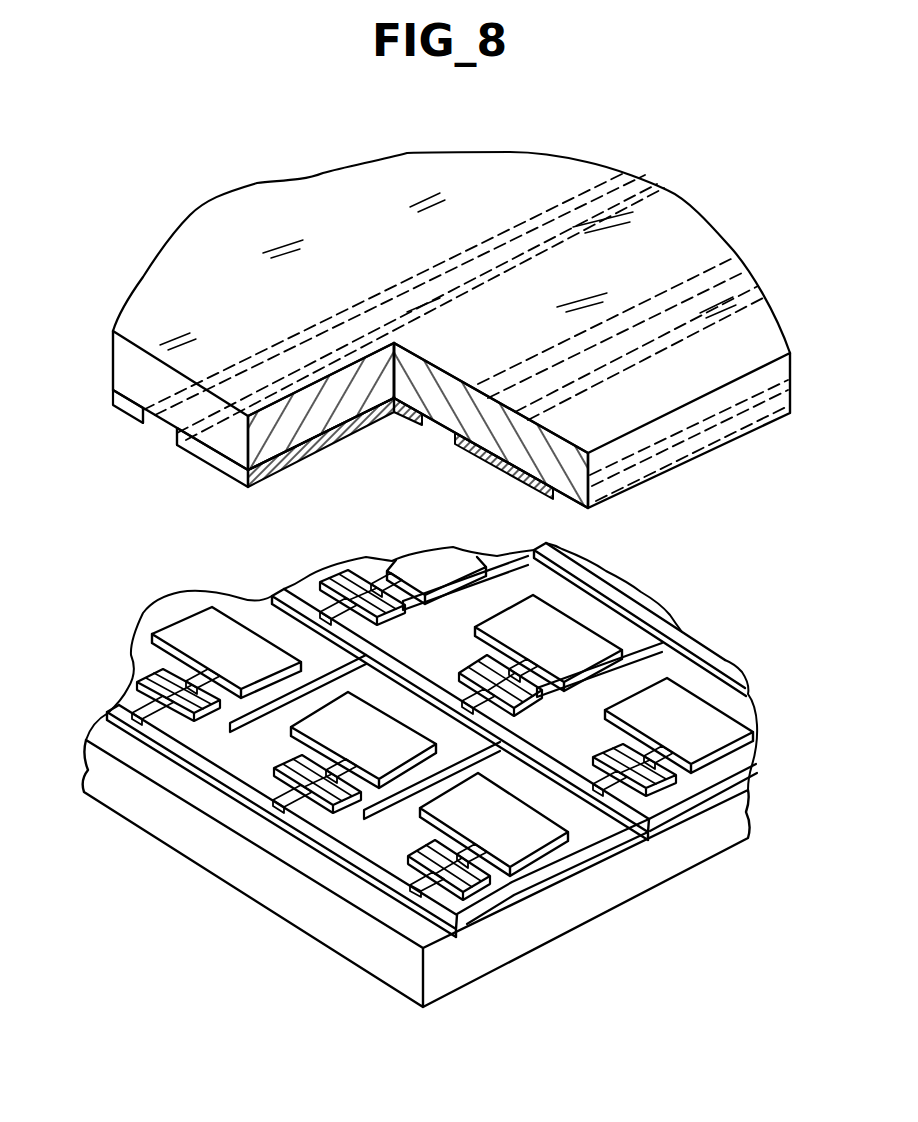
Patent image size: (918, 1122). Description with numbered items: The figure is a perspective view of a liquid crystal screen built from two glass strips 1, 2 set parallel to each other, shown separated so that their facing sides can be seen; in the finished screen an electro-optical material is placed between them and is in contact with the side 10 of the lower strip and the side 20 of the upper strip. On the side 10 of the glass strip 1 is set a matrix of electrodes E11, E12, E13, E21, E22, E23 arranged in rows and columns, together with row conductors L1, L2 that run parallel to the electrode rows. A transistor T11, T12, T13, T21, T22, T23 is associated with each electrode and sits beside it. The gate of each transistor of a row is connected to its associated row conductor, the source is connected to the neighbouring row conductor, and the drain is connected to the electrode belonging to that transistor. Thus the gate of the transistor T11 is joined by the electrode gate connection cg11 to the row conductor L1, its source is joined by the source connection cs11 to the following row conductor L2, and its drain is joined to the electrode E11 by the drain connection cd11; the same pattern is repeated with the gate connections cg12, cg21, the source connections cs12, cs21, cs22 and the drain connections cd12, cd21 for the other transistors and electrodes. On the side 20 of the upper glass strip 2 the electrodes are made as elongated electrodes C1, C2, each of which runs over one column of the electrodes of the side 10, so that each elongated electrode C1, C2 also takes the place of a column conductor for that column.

The glass strip 2 is at (118, 369).
The side of glass strip 20 is at (158, 429).
The elongated electrode C1 is at (518, 478).
The elongated electrode C2 is at (223, 472).
The glass strip 1 is at (335, 933).
The side of glass strip 10 is at (99, 740).
The row conductor L1 is at (462, 938).
The row conductor L2 is at (645, 838).
The electrode E11 is at (505, 802).
The electrode E12 is at (365, 712).
The electrode E13 is at (177, 630).
The electrode E21 is at (679, 714).
The electrode E22 is at (550, 618).
The electrode E23 is at (432, 577).
The transistor T11 is at (404, 872).
The transistor T12 is at (285, 770).
The transistor T13 is at (145, 680).
The transistor T21 is at (600, 752).
The transistor T22 is at (477, 668).
The transistor T23 is at (337, 585).
The drain connection cd11 is at (460, 846).
The drain connection cd12 is at (328, 762).
The drain connection cd21 is at (655, 749).
The electrode gate connection cg11 is at (459, 918).
The electrode gate connection cg12 is at (300, 803).
The electrode gate connection cg21 is at (643, 822).
The source connection cs11 is at (560, 868).
The source connection cs12 is at (404, 794).
The source connection cs21 is at (733, 788).
The source connection cs22 is at (669, 655).